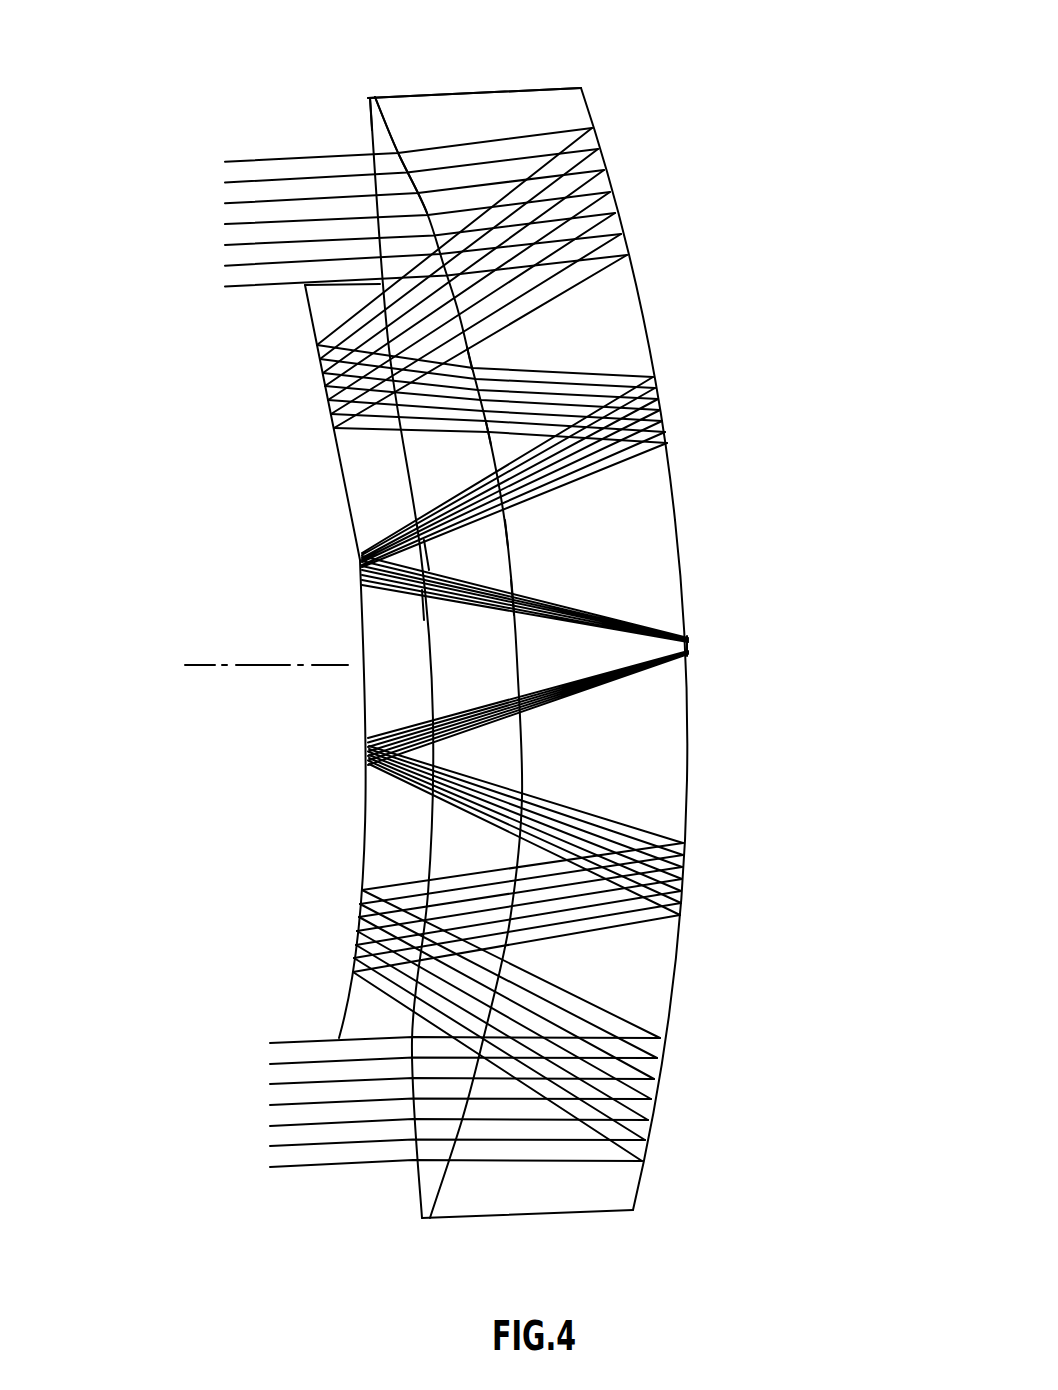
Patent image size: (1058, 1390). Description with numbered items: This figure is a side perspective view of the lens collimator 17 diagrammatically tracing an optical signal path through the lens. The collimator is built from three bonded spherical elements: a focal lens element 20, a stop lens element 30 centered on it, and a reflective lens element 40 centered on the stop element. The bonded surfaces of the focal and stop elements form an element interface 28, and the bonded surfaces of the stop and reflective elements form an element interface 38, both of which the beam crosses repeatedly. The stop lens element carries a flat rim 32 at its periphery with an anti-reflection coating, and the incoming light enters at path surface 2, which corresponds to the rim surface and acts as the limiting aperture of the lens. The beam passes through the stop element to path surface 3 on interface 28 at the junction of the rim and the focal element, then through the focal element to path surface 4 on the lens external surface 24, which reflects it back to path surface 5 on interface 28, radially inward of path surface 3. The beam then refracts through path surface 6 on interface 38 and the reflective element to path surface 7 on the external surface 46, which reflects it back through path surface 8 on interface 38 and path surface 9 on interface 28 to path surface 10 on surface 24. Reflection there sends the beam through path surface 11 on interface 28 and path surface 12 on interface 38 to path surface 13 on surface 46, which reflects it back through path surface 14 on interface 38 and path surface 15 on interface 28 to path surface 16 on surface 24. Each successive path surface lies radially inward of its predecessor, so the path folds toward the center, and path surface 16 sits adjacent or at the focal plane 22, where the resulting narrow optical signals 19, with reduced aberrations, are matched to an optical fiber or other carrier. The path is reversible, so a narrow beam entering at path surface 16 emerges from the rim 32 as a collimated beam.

The path surface 2 is at (374, 240).
The path surface 3 is at (430, 215).
The path surface 4 is at (612, 187).
The path surface 5 is at (470, 340).
The path surface 6 is at (320, 345).
The path surface 7 is at (340, 430).
The path surface 8 is at (413, 437).
The path surface 9 is at (492, 457).
The path surface 10 is at (667, 420).
The path surface 11 is at (503, 517).
The path surface 12 is at (428, 553).
The path surface 13 is at (362, 565).
The path surface 14 is at (423, 597).
The path surface 15 is at (513, 600).
The path surface 16 is at (687, 630).
The lens collimator 17 is at (748, 266).
The optical signals 19 is at (612, 620).
The focal lens element 20 is at (513, 102).
The focal plane 22 is at (698, 648).
The lens external surface 24 is at (688, 762).
The element interface 28 is at (535, 760).
The stop lens element 30 is at (455, 460).
The flat rim 32 is at (368, 120).
The element interface 38 is at (448, 688).
The reflective lens element 40 is at (370, 610).
The external surface 46 is at (370, 735).